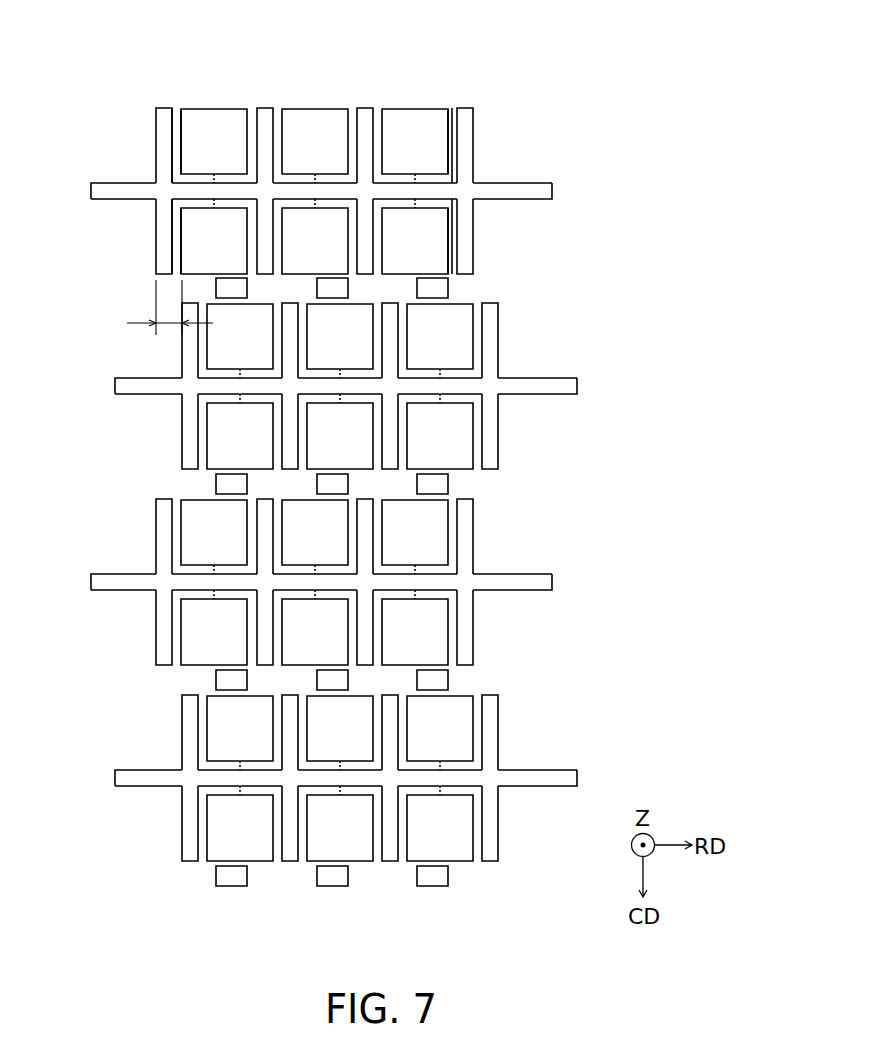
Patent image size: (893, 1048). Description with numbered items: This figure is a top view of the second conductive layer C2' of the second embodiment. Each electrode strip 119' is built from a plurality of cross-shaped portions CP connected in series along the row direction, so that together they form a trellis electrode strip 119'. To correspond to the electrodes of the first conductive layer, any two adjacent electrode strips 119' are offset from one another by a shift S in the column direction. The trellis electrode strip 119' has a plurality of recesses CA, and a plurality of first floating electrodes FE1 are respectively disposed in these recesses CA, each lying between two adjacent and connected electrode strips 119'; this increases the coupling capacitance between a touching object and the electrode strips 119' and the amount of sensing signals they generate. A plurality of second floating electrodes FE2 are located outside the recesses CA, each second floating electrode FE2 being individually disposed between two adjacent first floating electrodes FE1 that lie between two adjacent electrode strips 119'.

The second conductive layer C2' is at (356, 451).
The cross-shaped portion CP is at (162, 170).
The electrode strip 119' is at (359, 458).
The first floating electrode FE1 is at (327, 485).
The second floating electrode FE2 is at (240, 288).
The recess CA is at (181, 100).
The shift S is at (170, 307).